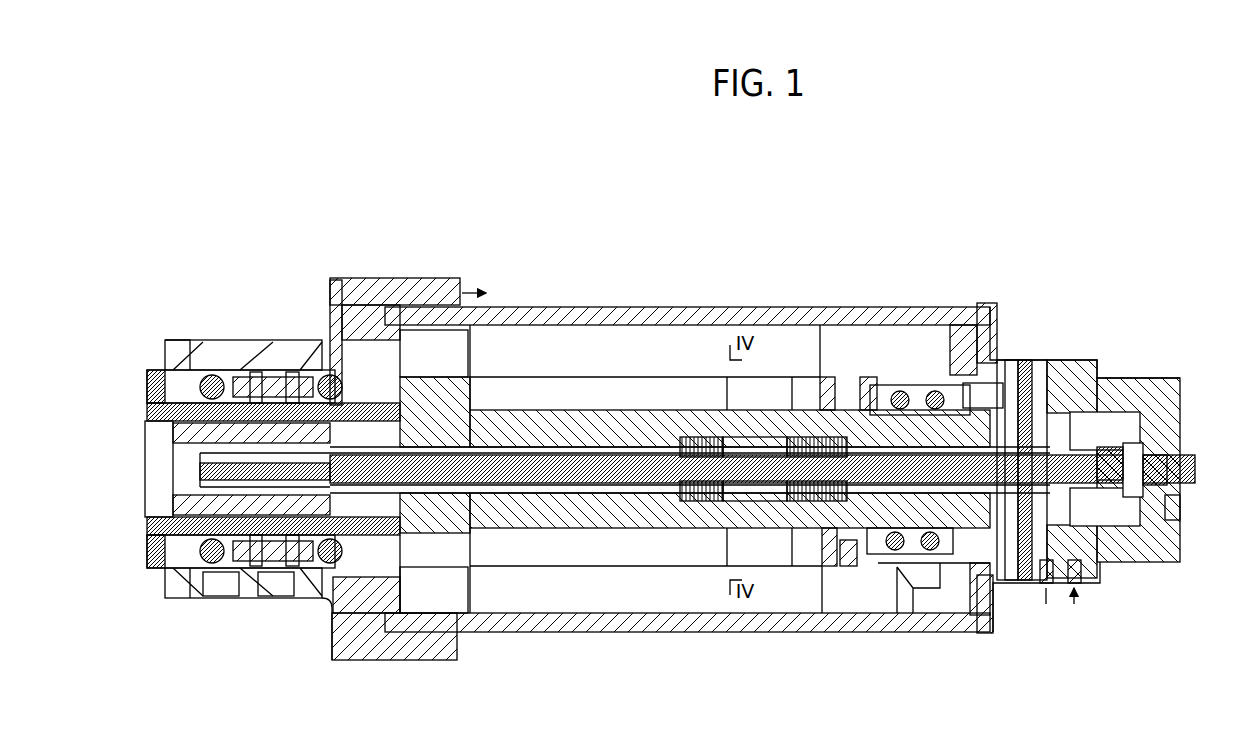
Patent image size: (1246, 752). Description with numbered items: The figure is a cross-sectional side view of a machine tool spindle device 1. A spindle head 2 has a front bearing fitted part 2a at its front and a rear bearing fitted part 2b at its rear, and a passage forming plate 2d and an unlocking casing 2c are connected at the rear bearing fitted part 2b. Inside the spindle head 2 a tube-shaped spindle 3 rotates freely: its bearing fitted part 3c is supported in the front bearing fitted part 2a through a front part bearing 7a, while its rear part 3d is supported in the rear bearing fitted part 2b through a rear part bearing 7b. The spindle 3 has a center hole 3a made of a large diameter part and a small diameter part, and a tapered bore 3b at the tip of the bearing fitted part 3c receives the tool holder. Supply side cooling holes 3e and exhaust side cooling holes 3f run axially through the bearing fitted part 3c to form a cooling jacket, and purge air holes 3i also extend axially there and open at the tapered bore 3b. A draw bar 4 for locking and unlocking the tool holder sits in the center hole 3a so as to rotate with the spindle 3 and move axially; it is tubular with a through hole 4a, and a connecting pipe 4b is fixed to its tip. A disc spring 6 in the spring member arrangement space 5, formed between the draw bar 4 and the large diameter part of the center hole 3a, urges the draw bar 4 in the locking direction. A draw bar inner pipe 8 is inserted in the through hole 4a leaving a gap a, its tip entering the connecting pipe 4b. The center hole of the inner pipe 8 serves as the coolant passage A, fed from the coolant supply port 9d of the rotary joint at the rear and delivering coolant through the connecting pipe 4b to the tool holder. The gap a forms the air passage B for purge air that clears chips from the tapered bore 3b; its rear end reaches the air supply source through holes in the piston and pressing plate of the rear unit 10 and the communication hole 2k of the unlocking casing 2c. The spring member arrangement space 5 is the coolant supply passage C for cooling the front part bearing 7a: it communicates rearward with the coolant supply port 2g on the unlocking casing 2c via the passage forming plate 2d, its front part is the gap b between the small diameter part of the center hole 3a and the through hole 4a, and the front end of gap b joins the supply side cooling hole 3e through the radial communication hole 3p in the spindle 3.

The machine tool spindle device 1 is at (786, 238).
The spindle head 2 is at (613, 302).
The front bearing fitted part 2a is at (228, 340).
The rear bearing fitted part 2b is at (998, 322).
The unlocking casing 2c is at (1075, 365).
The passage forming plate 2d is at (1028, 365).
The coolant supply port 2g is at (1078, 592).
The communication hole 2k is at (1180, 505).
The spindle 3 is at (648, 450).
The center hole 3a is at (730, 445).
The tapered bore 3b is at (147, 440).
The bearing fitted part 3c is at (273, 370).
The rear part 3d is at (951, 378).
The supply side cooling holes 3e is at (278, 586).
The exhaust side cooling holes 3f is at (255, 365).
The purge air holes 3i is at (243, 586).
The communication hole 3p is at (411, 569).
The draw bar 4 is at (790, 445).
The through hole 4a is at (759, 471).
The connecting pipe 4b is at (292, 368).
The spring member arrangement space 5 is at (870, 400).
The disc spring 6 is at (842, 376).
The front part bearing 7a is at (322, 340).
The rear part bearing 7b is at (920, 398).
The draw bar inner pipe 8 is at (618, 468).
The coolant supply port 9d is at (1185, 463).
The rear end block 10 is at (1132, 368).
The gap a is at (578, 445).
The gap b is at (550, 445).
The coolant passage A is at (648, 400).
The air passage B is at (615, 400).
The coolant supply passage C is at (573, 400).